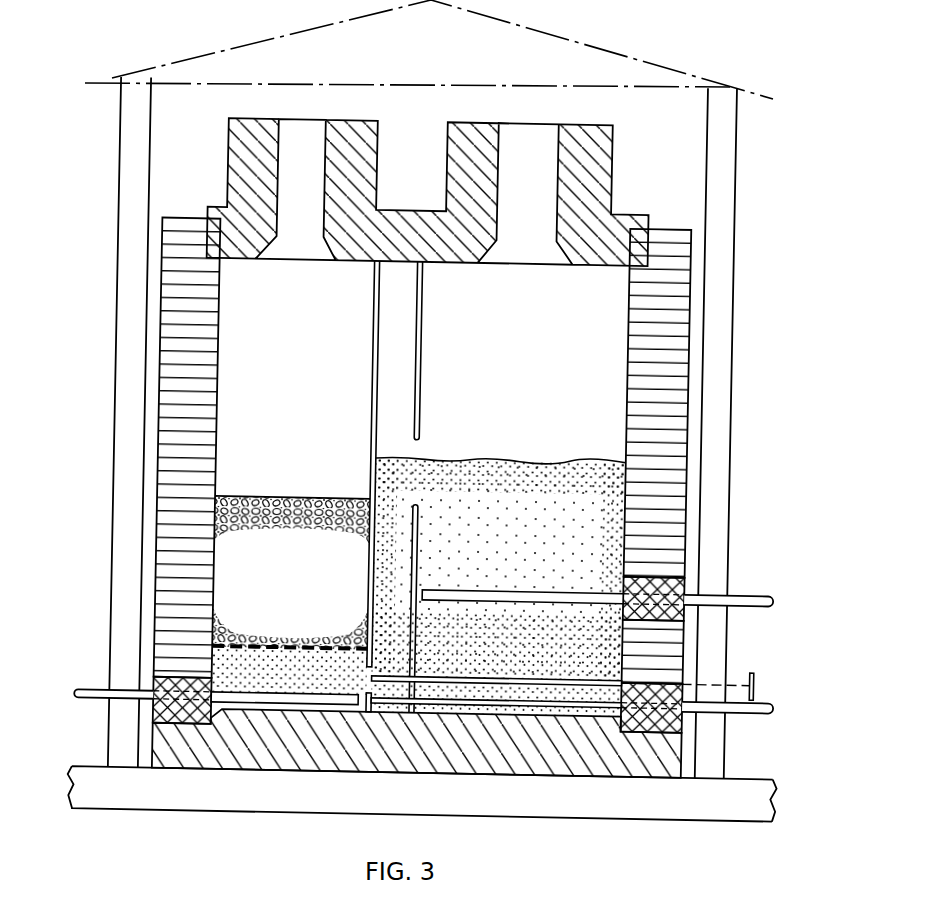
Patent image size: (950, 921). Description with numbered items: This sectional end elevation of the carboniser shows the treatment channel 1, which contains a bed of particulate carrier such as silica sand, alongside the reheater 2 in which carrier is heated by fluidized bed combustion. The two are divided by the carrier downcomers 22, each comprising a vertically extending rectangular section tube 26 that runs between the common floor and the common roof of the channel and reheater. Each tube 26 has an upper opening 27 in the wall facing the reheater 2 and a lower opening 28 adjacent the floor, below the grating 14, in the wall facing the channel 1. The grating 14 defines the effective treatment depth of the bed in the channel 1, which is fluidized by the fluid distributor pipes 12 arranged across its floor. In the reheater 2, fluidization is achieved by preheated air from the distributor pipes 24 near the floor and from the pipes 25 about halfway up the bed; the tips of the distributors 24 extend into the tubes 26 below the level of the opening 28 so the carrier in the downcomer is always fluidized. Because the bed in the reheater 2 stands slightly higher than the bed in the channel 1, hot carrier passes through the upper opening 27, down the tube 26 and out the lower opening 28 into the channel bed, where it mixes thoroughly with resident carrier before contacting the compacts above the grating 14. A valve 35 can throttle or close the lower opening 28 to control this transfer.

The treatment channel 1 is at (158, 422).
The reheater 2 is at (689, 446).
The fluid distributor pipes 12 is at (275, 696).
The grating 14 is at (309, 652).
The carrier downcomers 22 is at (419, 532).
The distributor pipes 24 is at (536, 676).
The pipes 25 is at (526, 590).
The rectangular section tubes 26 is at (421, 390).
The upper opening 27 is at (418, 448).
The lower opening 28 is at (361, 677).
The valve 35 is at (385, 693).